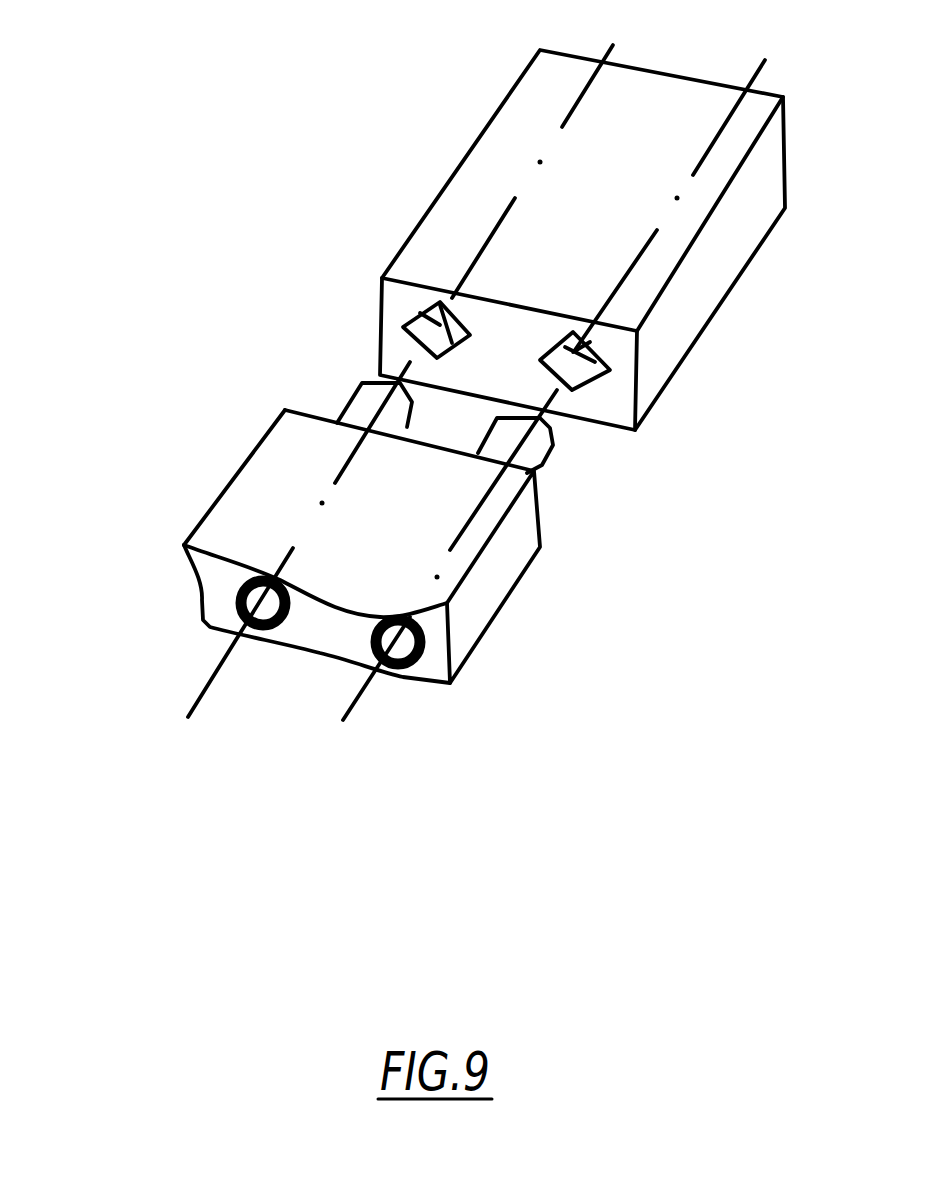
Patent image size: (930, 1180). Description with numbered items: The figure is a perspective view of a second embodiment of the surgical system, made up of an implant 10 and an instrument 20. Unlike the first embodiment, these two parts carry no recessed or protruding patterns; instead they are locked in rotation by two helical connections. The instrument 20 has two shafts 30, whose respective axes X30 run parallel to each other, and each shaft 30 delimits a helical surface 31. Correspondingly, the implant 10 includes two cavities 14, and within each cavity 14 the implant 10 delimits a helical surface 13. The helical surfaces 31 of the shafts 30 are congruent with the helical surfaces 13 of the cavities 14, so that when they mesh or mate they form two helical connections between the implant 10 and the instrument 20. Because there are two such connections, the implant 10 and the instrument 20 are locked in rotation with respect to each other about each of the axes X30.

The implant 10 is at (478, 105).
The helical surface 13 is at (420, 323).
The cavity 14 is at (422, 318).
The instrument 20 is at (168, 541).
The shaft 30 is at (342, 411).
The helical surface 31 is at (359, 386).
The axis X30 is at (352, 574).